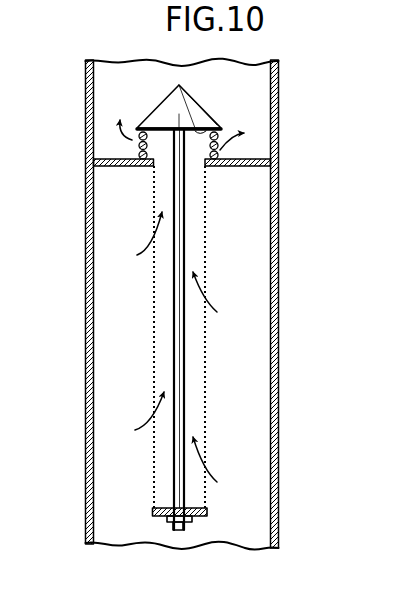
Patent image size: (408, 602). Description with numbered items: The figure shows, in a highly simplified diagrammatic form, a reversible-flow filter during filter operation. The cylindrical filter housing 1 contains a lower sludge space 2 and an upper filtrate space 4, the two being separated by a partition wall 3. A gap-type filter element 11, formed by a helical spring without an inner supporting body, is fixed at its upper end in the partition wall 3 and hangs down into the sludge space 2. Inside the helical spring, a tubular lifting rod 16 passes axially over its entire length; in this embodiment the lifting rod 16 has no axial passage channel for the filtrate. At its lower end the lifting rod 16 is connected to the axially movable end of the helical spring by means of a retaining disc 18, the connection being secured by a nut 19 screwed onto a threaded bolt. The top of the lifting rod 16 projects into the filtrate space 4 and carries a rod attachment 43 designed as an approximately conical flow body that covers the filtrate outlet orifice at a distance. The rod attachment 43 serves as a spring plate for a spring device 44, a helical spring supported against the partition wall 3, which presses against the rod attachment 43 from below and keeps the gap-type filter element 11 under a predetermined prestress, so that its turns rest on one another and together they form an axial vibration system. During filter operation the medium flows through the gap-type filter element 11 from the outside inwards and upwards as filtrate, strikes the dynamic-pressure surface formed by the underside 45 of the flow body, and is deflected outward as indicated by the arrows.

The filter housing 1 is at (278, 305).
The sludge space 2 is at (102, 373).
The partition wall 3 is at (112, 167).
The filtrate space 4 is at (100, 101).
The gap-type filter element 11 is at (153, 312).
The lifting rod 16 is at (175, 262).
The retaining disc 18 is at (152, 513).
The nut 19 is at (165, 527).
The rod attachment 43 is at (193, 108).
The spring device 44 is at (139, 145).
The underside 45 is at (214, 128).